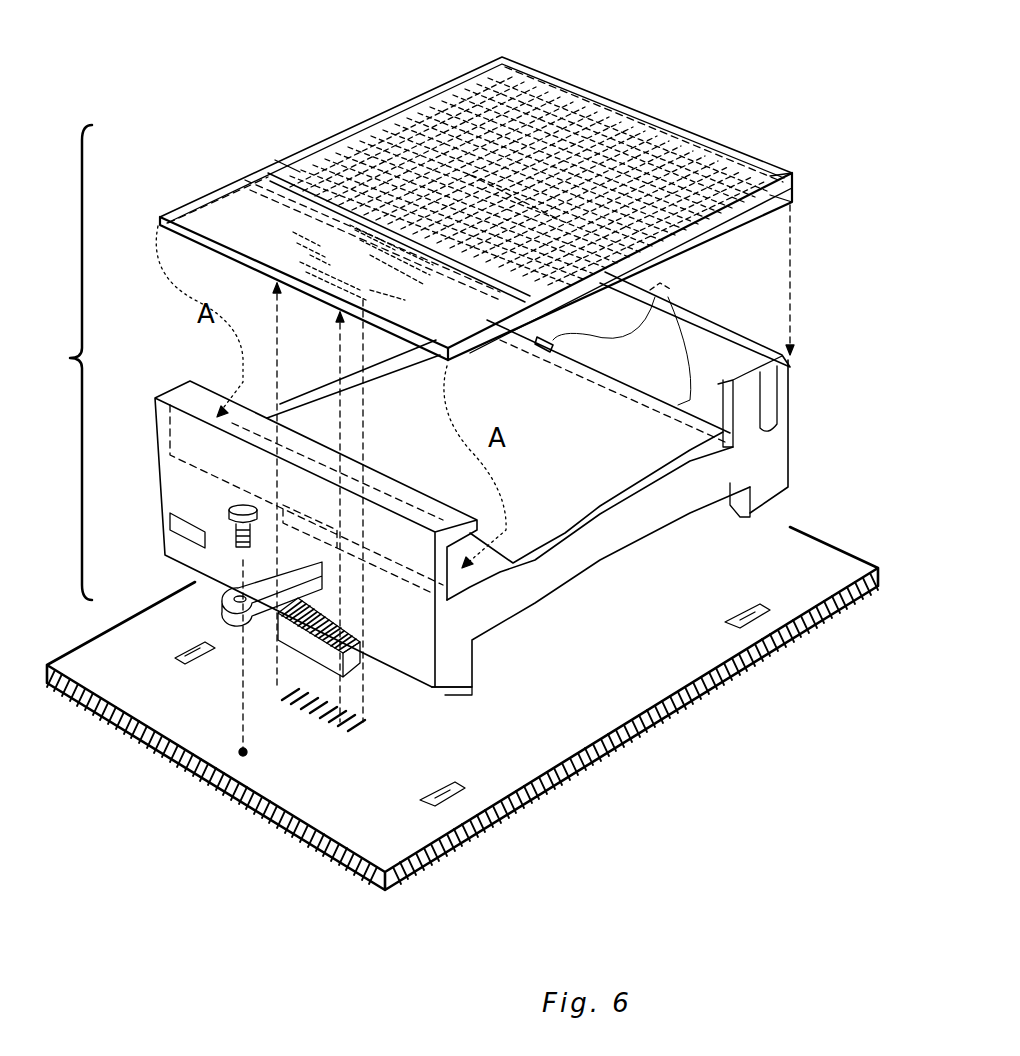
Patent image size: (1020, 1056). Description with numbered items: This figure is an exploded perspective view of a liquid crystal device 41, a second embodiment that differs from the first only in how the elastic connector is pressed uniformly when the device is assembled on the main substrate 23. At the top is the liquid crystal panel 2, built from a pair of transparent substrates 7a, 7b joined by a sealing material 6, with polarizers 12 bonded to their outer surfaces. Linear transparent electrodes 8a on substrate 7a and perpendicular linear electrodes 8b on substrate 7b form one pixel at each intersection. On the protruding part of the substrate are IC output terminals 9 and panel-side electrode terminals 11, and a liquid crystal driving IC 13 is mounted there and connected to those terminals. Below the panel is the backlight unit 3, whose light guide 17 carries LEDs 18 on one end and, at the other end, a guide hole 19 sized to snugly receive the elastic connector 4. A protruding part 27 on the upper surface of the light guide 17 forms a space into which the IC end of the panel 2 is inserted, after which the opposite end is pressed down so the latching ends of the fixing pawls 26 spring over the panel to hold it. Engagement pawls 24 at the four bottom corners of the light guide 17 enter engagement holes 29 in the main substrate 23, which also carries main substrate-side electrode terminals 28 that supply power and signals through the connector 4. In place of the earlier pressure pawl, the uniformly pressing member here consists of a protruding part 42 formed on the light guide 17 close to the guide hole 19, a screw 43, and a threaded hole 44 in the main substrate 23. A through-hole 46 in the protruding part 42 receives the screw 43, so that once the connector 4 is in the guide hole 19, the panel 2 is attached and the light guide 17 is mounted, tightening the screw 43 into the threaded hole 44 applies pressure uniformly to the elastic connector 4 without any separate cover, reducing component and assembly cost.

The liquid crystal panel 2 is at (657, 114).
The backlight unit 3 is at (477, 487).
The elastic connector 4 is at (350, 655).
The sealing material 6 is at (455, 100).
The substrate 7a is at (795, 173).
The substrate 7b is at (790, 205).
The linear transparent electrodes 8a is at (555, 240).
The linear electrodes 8b is at (535, 112).
The IC output terminals 9 is at (430, 283).
The panel-side electrode terminals 11 is at (293, 280).
The polarizers 12 is at (287, 157).
The liquid crystal driving IC 13 is at (383, 298).
The light guide 17 is at (535, 512).
The LEDs 18 is at (665, 286).
The guide hole 19 is at (337, 520).
The main substrate 23 is at (600, 712).
The engagement pawls 24 is at (175, 538).
The fixing pawl 26 is at (727, 427).
The protruding part 27 is at (200, 412).
The main substrate-side electrode terminals 28 is at (358, 725).
The engagement holes 29 is at (185, 656).
The liquid crystal device 41 is at (60, 362).
The protruding part 42 is at (230, 628).
The screw 43 is at (230, 508).
The threaded hole 44 is at (238, 753).
The through-hole 46 is at (222, 606).